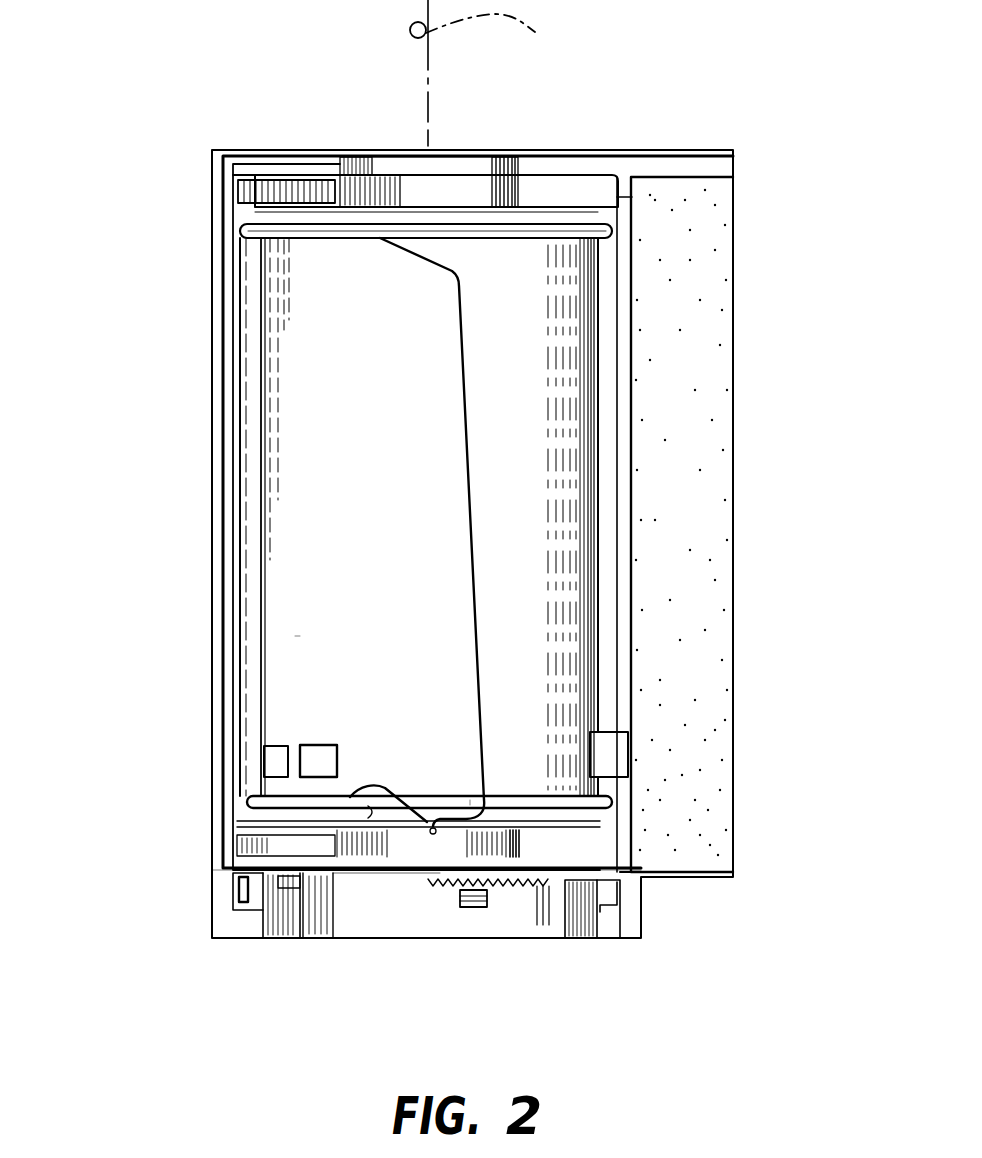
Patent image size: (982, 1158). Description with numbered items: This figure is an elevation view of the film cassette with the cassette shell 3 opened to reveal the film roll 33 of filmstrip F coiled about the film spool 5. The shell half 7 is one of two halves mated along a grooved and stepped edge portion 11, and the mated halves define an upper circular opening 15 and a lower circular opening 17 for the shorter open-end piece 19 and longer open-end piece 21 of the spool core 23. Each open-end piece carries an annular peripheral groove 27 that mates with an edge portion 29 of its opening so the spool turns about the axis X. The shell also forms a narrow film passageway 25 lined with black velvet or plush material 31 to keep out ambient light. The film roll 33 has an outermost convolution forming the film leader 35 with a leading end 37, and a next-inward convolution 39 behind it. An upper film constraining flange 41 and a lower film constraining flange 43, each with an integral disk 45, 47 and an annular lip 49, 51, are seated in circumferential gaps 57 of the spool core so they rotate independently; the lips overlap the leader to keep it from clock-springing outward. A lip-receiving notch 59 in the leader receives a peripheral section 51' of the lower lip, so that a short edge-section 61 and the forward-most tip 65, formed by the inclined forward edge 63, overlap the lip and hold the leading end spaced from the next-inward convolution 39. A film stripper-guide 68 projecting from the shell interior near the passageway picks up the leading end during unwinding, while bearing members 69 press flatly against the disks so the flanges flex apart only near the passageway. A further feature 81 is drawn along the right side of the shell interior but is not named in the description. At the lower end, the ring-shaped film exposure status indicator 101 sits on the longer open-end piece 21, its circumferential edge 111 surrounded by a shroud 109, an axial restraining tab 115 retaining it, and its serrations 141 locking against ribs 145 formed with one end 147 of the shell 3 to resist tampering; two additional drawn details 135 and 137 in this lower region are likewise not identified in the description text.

The axis X is at (483, 73).
The filmstrip F is at (295, 636).
The cassette shell 3 is at (279, 142).
The film spool 5 is at (248, 598).
The shell half 7 is at (235, 150).
The grooved and stepped edge portion 11 is at (226, 290).
The upper circular opening 15 is at (505, 165).
The lower circular opening 17 is at (350, 864).
The shorter open-end piece 19 is at (344, 156).
The longer open-end piece 21 is at (406, 838).
The spool core 23 is at (364, 142).
The film passageway 25 is at (727, 378).
The annular peripheral groove 27 is at (392, 170).
The edge portion 29 is at (470, 162).
The black velvet or plush material 31 is at (680, 254).
The film roll 33 is at (250, 540).
The film leader 35 is at (272, 452).
The leading end 37 is at (462, 557).
The next-inward convolution 39 is at (540, 472).
The upper film constraining flange 41 is at (234, 215).
The lower film constraining flange 43 is at (245, 815).
The disk 45 is at (561, 205).
The disk 47 is at (595, 845).
The annular lip 49 is at (605, 170).
The annular lip 51 is at (631, 768).
The peripheral section of annular lip 51' is at (388, 764).
The circumferential gap 57 is at (248, 382).
The lip-receiving notch 59 is at (370, 792).
The edge-section 61 is at (433, 829).
The forward edge 63 is at (462, 448).
The forward-most tip 65 is at (475, 800).
The film stripper-guide 68 is at (590, 741).
The bearing member 69 is at (248, 180).
The channel 81 is at (620, 596).
The film exposure status indicator 101 is at (382, 946).
The shroud 109 is at (218, 912).
The circumferential edge 111 is at (337, 923).
The axial restraining tab 115 is at (478, 906).
The lip 135 is at (240, 906).
The bolt 137 is at (620, 905).
The serrations 141 is at (431, 880).
The ribs 145 is at (245, 889).
The end of cassette shell 147 is at (260, 852).